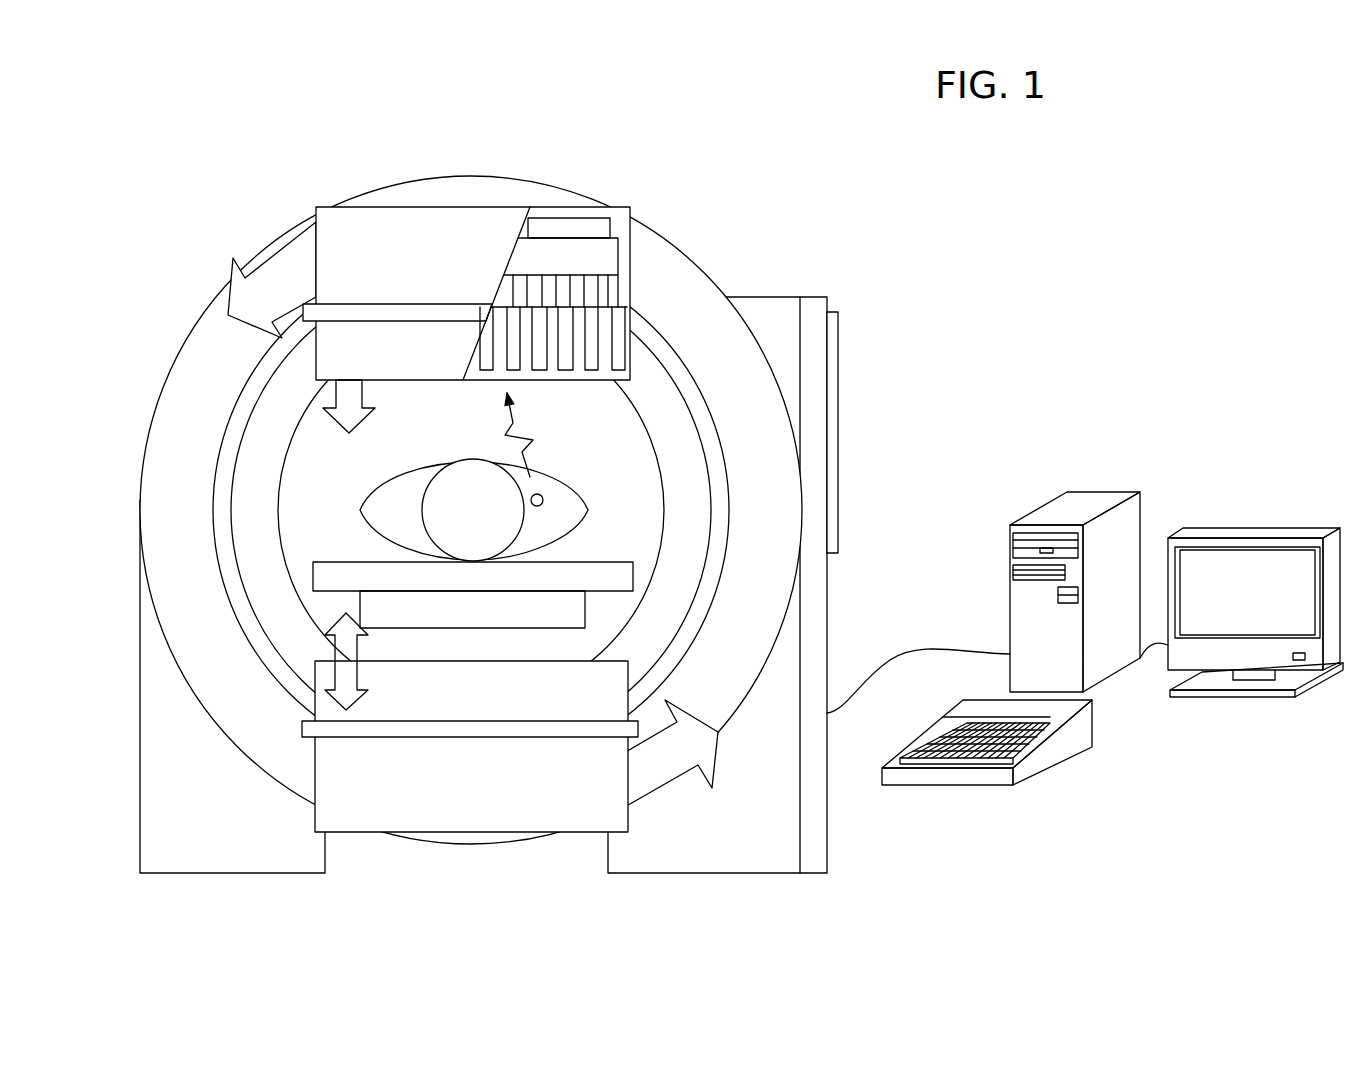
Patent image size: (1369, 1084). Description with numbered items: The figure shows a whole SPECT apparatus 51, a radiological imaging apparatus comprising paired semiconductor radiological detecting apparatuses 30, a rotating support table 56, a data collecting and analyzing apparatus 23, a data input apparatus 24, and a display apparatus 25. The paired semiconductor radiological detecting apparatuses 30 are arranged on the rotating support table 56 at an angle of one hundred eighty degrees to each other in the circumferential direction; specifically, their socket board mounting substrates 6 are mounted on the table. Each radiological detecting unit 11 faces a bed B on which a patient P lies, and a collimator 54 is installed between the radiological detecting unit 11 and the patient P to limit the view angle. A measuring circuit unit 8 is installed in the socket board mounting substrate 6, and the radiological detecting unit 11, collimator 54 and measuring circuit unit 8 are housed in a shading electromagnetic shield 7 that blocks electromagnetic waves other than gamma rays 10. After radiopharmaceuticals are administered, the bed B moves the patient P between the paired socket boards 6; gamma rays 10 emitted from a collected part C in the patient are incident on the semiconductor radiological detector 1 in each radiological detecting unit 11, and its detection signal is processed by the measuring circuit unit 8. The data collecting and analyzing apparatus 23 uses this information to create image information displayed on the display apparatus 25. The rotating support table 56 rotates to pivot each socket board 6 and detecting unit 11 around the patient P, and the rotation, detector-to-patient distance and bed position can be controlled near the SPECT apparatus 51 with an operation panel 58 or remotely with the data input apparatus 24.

The semiconductor radiological detector 1 is at (610, 290).
The socket board mounting substrate 6 is at (530, 258).
The shading electromagnetic shield 7 is at (342, 238).
The measuring circuit unit 8 is at (550, 213).
The gamma rays 10 is at (527, 462).
The radiological detecting unit 11 is at (517, 268).
The data collecting and analyzing apparatus 23 is at (1098, 502).
The data input apparatus 24 is at (1040, 758).
The display apparatus 25 is at (1255, 558).
The semiconductor radiological detecting apparatus 30 is at (620, 202).
The SPECT apparatus 51 is at (683, 238).
The collimator 54 is at (618, 323).
The rotating support table 56 is at (182, 609).
The operation panel 58 is at (838, 338).
The bed B is at (320, 577).
The collected part C is at (543, 498).
The patient P is at (562, 522).